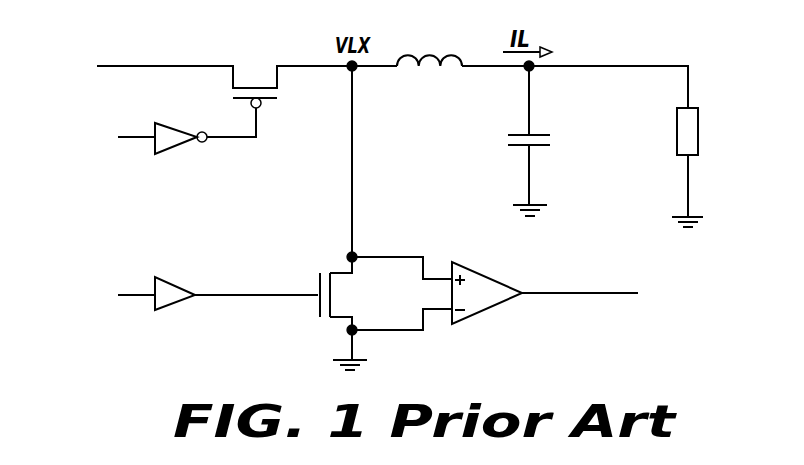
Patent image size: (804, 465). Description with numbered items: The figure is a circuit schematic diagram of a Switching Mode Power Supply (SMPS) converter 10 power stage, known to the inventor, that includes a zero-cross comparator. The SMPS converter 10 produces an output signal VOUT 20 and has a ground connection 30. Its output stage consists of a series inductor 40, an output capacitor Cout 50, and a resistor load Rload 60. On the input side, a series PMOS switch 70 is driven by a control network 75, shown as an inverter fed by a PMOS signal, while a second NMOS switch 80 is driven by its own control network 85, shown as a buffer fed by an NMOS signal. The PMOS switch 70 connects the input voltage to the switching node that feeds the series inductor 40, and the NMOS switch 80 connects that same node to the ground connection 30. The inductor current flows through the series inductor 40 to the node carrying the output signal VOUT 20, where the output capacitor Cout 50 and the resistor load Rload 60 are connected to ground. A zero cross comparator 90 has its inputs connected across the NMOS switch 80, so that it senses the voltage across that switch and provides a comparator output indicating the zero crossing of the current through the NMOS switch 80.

The SMPS converter 10 is at (118, 50).
The output signal VOUT 20 is at (677, 57).
The ground connection 30 is at (322, 360).
The series inductor 40 is at (442, 27).
The output capacitor Cout 50 is at (503, 138).
The resistor load Rload 60 is at (718, 112).
The series PMOS switch 70 is at (267, 43).
The control network 75 is at (88, 122).
The NMOS switch 80 is at (330, 263).
The control network 85 is at (92, 278).
The zero cross comparator 90 is at (477, 316).